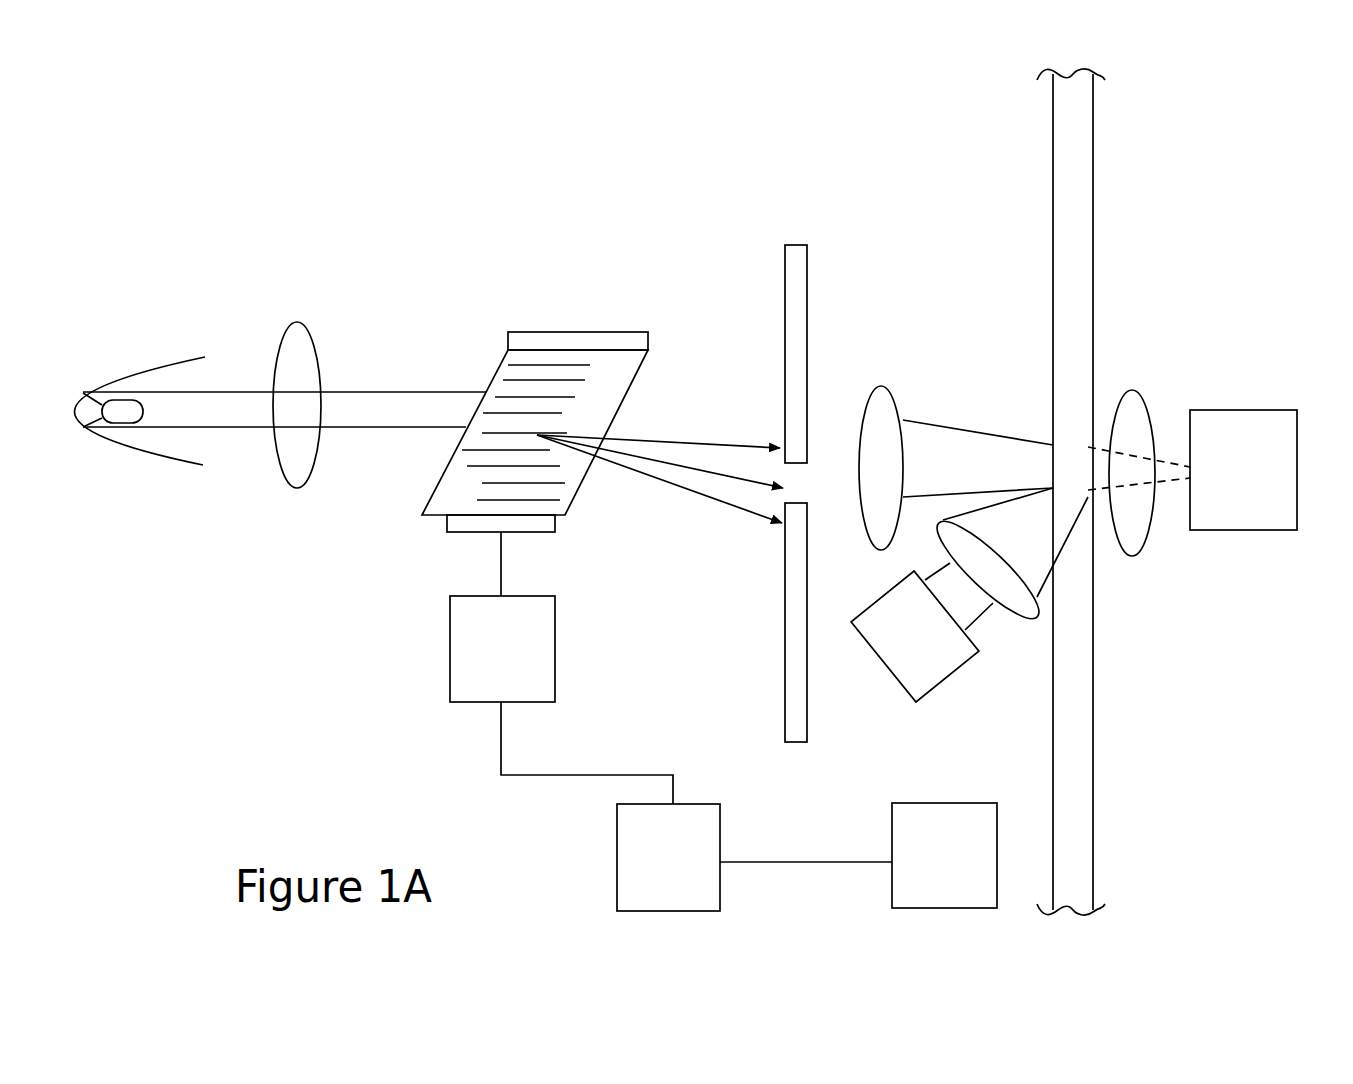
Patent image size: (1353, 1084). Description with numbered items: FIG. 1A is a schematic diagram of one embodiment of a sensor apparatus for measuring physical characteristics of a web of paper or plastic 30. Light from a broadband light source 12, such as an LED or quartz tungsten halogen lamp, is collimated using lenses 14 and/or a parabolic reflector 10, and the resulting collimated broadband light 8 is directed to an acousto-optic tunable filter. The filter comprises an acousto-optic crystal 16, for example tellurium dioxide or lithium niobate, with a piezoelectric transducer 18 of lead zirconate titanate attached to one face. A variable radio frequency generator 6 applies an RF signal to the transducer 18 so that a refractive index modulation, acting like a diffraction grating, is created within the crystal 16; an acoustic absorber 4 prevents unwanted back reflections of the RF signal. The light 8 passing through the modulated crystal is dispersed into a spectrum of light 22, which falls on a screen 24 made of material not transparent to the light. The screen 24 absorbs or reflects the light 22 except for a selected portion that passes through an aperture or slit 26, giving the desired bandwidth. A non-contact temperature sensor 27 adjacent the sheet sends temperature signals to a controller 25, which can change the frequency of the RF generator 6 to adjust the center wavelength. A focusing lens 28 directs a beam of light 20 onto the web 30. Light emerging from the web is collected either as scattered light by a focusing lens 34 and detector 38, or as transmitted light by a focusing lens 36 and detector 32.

The acoustic absorber 4 is at (632, 332).
The variable radio frequency generator 6 is at (547, 703).
The collimated broadband light 8 is at (368, 390).
The parabolic reflector 10 is at (137, 455).
The broadband light source 12 is at (127, 402).
The lenses 14 is at (297, 488).
The acousto-optic crystal 16 is at (585, 478).
The piezoelectric transducer 18 is at (533, 533).
The beam of light 20 is at (967, 428).
The spectrum of light 22 is at (678, 440).
The screen 24 is at (800, 742).
The controller 25 is at (668, 857).
The aperture or slit 26 is at (812, 480).
The non-contact temperature sensor 27 is at (944, 855).
The focusing lens 28 is at (893, 393).
The web of paper or plastic 30 is at (1093, 323).
The detector 32 is at (1242, 410).
The focusing lens 34 is at (995, 610).
The focusing lens 36 is at (1127, 395).
The detector 38 is at (943, 683).